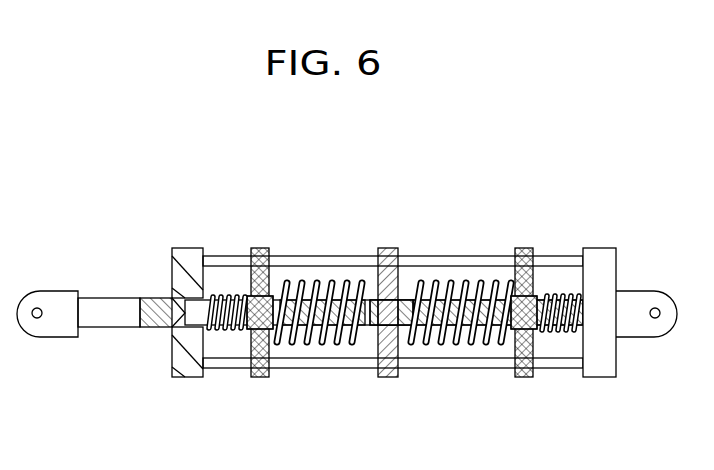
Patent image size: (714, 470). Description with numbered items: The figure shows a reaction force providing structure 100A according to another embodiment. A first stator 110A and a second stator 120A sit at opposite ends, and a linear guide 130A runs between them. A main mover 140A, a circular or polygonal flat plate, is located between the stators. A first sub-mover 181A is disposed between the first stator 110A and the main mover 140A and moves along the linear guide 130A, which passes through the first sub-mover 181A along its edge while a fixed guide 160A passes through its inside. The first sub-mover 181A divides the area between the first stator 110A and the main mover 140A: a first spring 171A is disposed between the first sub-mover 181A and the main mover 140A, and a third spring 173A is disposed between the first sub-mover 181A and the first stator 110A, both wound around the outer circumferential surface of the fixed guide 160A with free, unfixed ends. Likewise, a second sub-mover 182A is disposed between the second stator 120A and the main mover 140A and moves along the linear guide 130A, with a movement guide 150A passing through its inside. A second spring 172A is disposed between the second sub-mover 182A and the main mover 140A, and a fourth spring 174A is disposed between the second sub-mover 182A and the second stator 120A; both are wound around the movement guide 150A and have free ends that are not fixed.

The reaction force providing structure 100A is at (88, 160).
The first stator 110A is at (600, 250).
The second stator 120A is at (188, 250).
The linear guide 130A is at (458, 256).
The main mover 140A is at (388, 248).
The movement guide 150A is at (107, 308).
The fixed guide 160A is at (388, 378).
The first spring 171A is at (473, 342).
The second spring 172A is at (325, 346).
The third spring 173A is at (555, 336).
The fourth spring 174A is at (225, 332).
The first sub-mover 181A is at (520, 248).
The second sub-mover 182A is at (259, 248).